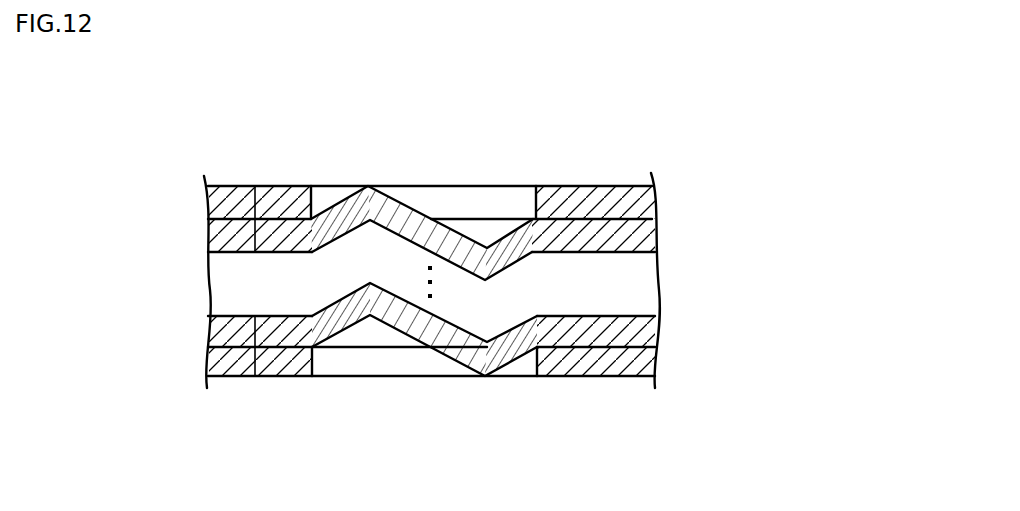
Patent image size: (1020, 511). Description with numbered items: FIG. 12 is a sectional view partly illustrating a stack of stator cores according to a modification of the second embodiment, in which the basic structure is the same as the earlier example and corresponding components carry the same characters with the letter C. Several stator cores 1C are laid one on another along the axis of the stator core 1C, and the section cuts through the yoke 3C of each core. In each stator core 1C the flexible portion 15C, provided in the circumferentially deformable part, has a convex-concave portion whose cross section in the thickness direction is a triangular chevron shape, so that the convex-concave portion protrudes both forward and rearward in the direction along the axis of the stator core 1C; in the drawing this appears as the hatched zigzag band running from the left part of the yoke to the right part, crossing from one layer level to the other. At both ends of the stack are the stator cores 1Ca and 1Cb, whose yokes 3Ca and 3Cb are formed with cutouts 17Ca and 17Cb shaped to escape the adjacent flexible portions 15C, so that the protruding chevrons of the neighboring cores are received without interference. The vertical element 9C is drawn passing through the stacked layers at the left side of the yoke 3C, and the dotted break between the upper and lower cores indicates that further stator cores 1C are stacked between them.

The stator core 1C is at (660, 236).
The stator core 1Ca is at (662, 203).
The stator core 1Cb is at (655, 360).
The yoke 3C is at (571, 230).
The yoke 3Ca is at (623, 184).
The yoke 3Cb is at (623, 364).
The via conductor 9C is at (256, 184).
The flexible portion 15C is at (408, 203).
The cutout 17Ca is at (534, 202).
The cutout 17Cb is at (537, 349).